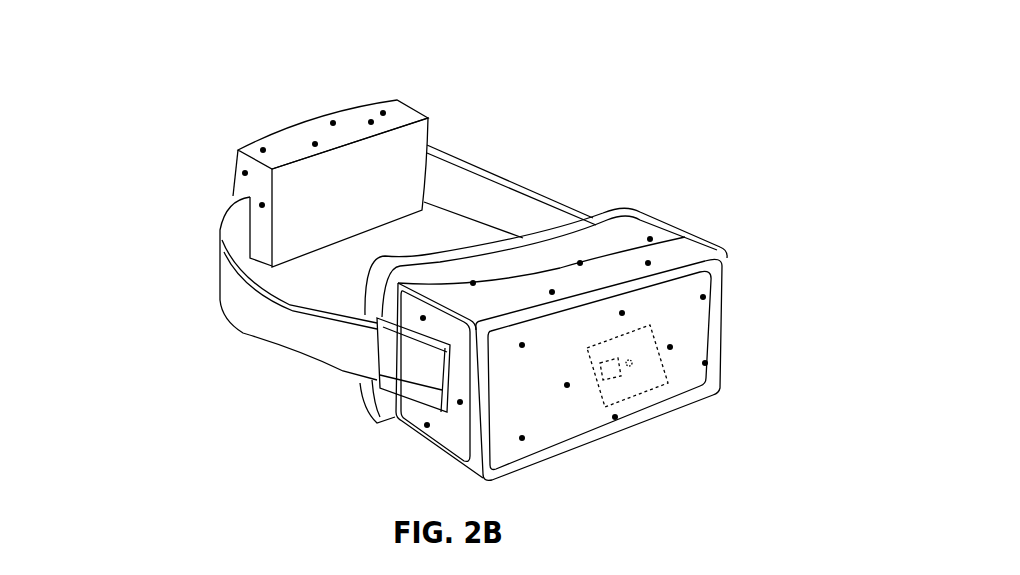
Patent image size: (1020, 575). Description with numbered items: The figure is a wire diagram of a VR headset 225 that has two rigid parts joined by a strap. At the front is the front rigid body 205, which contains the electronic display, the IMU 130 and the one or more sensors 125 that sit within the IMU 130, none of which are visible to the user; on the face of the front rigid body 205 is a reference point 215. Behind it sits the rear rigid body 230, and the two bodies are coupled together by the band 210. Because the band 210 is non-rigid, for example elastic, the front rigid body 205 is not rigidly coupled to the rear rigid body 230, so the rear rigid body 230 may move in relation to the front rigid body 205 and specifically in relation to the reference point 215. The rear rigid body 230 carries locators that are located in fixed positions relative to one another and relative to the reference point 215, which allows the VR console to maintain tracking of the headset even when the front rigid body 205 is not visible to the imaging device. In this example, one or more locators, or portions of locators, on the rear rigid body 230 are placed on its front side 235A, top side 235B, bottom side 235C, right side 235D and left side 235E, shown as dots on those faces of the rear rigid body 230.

The sensors 125 is at (608, 381).
The IMU 130 is at (680, 366).
The front rigid body 205 is at (720, 390).
The band 210 is at (543, 193).
The reference point 215 is at (633, 380).
The VR headset 225 is at (57, 39).
The rear rigid body 230 is at (341, 115).
The front side 235A is at (252, 115).
The top side 235B is at (320, 132).
The bottom side 235C is at (310, 270).
The right side 235D is at (258, 182).
The left side 235E is at (450, 133).